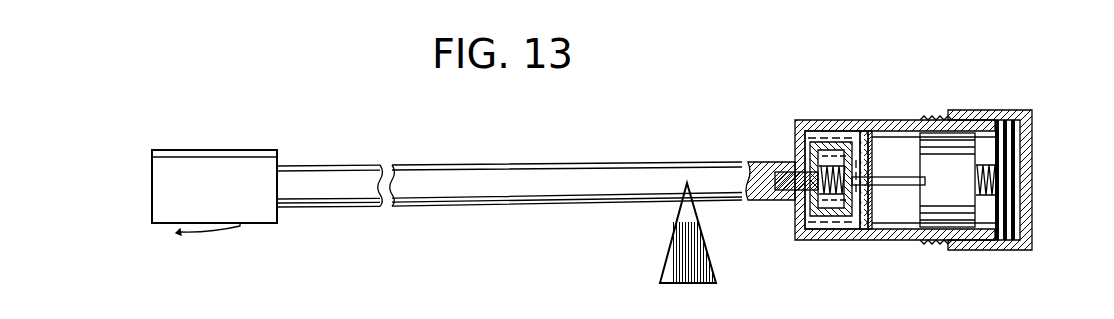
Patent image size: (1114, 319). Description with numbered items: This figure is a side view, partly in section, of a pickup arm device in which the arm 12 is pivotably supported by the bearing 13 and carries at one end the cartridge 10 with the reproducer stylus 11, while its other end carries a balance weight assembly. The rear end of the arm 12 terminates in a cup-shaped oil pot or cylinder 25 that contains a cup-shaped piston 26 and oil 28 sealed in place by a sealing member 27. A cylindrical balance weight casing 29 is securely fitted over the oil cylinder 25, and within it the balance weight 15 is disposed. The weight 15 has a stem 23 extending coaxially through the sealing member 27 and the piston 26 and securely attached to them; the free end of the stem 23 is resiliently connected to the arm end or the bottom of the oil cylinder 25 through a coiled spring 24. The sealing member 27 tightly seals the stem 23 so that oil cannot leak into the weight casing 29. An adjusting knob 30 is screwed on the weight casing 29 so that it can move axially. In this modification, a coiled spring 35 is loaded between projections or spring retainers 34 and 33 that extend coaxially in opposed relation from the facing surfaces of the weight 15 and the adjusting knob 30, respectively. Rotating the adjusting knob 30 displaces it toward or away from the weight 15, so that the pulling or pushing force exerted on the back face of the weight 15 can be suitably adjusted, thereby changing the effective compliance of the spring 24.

The cartridge 10 is at (218, 158).
The reproducer stylus 11 is at (178, 233).
The arm 12 is at (467, 166).
The bearing 13 is at (678, 260).
The balance weight 15 is at (920, 160).
The stem 23 is at (890, 186).
The coiled spring 24 is at (808, 196).
The oil pot or cylinder 25 is at (830, 129).
The piston 26 is at (831, 215).
The sealing member 27 is at (870, 140).
The oil 28 is at (806, 146).
The balance weight casing 29 is at (890, 120).
The adjusting knob 30 is at (1032, 135).
The spring retainer 33 is at (1020, 180).
The spring retainer 34 is at (978, 178).
The coiled spring 35 is at (975, 200).